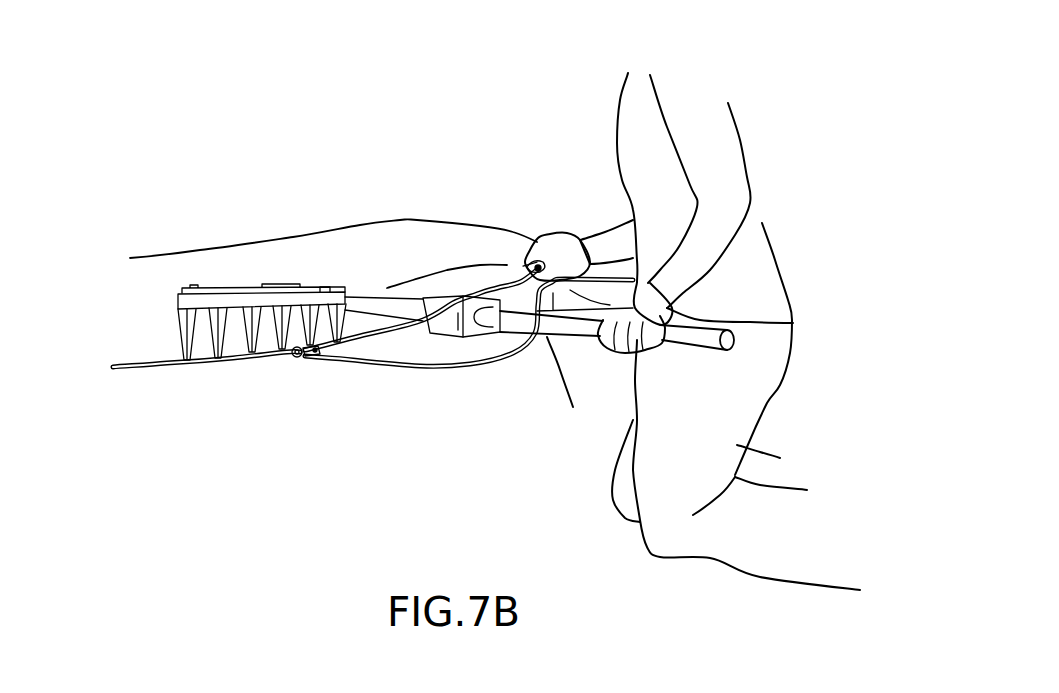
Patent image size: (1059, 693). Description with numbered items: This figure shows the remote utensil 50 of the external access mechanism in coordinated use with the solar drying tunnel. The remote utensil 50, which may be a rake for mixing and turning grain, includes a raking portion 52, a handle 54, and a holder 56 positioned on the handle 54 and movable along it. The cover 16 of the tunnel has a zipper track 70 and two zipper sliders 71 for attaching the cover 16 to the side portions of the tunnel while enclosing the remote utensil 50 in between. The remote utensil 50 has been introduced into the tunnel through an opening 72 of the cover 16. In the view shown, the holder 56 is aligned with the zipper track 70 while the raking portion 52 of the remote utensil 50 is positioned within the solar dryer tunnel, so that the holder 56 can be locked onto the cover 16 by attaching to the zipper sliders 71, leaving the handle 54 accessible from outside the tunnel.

The cover 16 is at (295, 237).
The remote utensil 50 is at (360, 337).
The raking portion 52 is at (177, 307).
The handle 54 is at (588, 337).
The holder 56 is at (443, 337).
The zipper track 70 is at (163, 366).
The zipper sliders 71 is at (300, 356).
The opening 72 is at (487, 345).